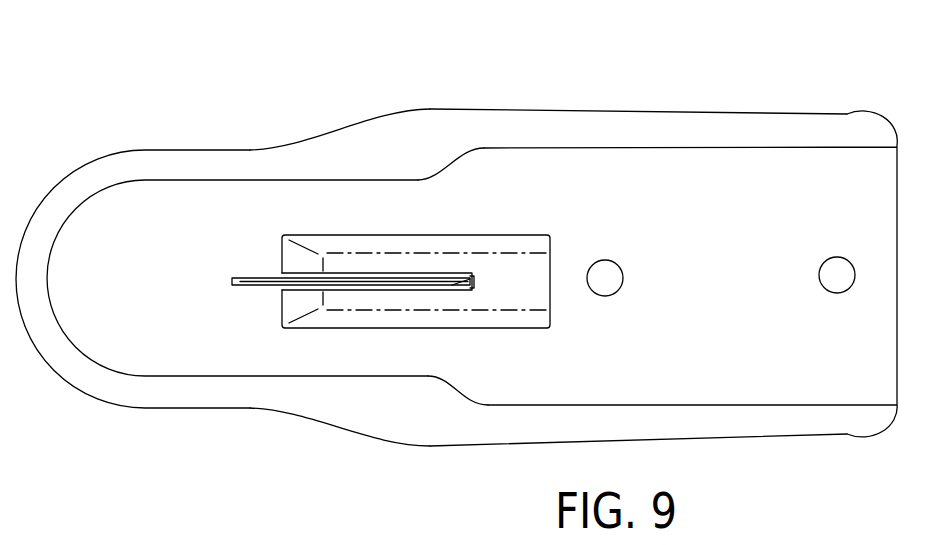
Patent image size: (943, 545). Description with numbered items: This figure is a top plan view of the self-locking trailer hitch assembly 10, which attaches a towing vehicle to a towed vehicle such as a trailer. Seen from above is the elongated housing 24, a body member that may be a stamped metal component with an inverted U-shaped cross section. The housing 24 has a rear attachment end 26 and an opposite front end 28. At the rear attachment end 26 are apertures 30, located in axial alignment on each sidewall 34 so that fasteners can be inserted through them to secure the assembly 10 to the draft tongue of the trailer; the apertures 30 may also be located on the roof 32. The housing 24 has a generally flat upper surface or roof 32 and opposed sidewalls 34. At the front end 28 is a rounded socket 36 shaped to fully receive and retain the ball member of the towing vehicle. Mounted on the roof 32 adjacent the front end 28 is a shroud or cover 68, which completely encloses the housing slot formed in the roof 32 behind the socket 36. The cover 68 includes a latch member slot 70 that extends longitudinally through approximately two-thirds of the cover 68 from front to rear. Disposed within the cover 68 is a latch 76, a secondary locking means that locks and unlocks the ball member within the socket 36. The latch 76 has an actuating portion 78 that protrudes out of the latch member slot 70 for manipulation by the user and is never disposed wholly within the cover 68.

The self-locking trailer hitch assembly 10 is at (456, 267).
The housing 24 is at (256, 424).
The rear attachment end 26 is at (749, 457).
The front end 28 is at (80, 410).
The apertures 30 is at (614, 270).
The roof 32 is at (729, 280).
The sidewalls 34 is at (680, 113).
The socket 36 is at (80, 223).
The cover 68 is at (485, 234).
The latch member slot 70 is at (460, 286).
The latch 76 is at (362, 274).
The actuating portion 78 is at (232, 284).